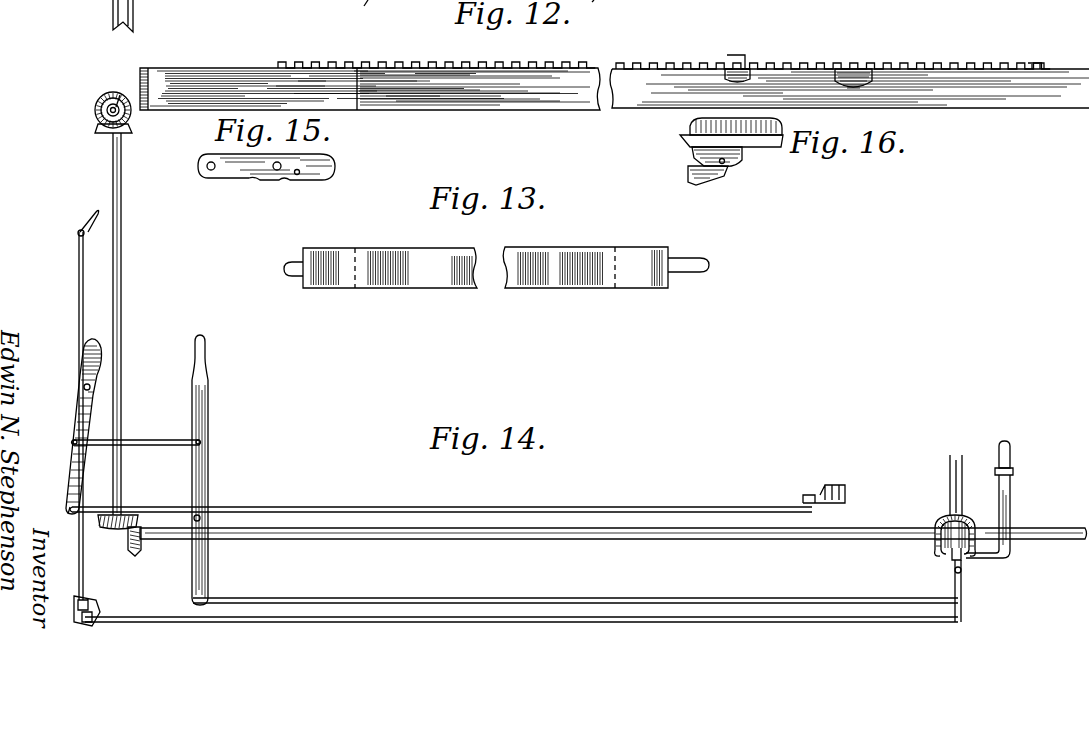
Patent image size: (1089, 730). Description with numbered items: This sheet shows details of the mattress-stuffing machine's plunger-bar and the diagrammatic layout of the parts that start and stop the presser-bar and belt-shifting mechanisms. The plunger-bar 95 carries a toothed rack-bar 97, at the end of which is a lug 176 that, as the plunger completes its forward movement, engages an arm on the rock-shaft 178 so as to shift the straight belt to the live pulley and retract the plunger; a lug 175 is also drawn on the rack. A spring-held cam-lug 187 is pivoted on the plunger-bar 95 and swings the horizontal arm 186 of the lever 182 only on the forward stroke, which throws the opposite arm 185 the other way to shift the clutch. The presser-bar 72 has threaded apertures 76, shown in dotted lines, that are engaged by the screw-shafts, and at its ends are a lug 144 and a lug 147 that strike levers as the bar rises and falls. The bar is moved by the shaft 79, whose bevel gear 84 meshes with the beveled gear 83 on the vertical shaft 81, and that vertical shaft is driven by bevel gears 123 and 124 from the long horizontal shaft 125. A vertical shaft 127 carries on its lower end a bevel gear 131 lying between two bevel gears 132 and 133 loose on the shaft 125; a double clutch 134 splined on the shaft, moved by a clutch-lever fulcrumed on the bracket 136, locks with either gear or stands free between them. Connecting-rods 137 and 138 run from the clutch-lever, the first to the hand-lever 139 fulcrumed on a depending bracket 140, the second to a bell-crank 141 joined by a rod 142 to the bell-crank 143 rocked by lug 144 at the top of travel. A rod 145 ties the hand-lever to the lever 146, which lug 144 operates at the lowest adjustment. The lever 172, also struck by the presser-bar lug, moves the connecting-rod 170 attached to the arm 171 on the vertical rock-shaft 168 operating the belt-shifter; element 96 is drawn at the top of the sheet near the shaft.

In FIG. 12, the pointer ribbon 96 is at (139, 16).
In FIG. 12, the vertical rock-shaft 168 is at (381, 11).
In FIG. 12, the rock-shaft 178 is at (605, 5).
In FIG. 12, the bevel gear 84 is at (97, 109).
In FIG. 12, the shaft 79 is at (125, 84).
In FIG. 12, the beveled gear 83 is at (96, 130).
In FIG. 12, the vertical shaft 81 is at (122, 166).
In FIG. 12, the rack-bar 97 is at (640, 64).
In FIG. 16, the rack-bar 97 is at (690, 128).
In FIG. 12, the rack lug 175 is at (856, 72).
In FIG. 12, the lug 176 is at (1048, 50).
In FIG. 15, the depending bracket 140 is at (262, 182).
In FIG. 16, the plunger-bar 95 is at (731, 152).
In FIG. 16, the cam-lug 187 is at (696, 186).
In FIG. 13, the presser-bar 72 is at (485, 283).
In FIG. 13, the threaded apertures 76 is at (616, 244).
In FIG. 13, the lug 147 is at (293, 278).
In FIG. 13, the lug 144 is at (705, 250).
In FIG. 14, the bell-crank 143 is at (77, 232).
In FIG. 14, the lever 146 is at (76, 413).
In FIG. 14, the lever 172 is at (72, 500).
In FIG. 14, the rod 142 is at (77, 525).
In FIG. 14, the rod 145 is at (136, 432).
In FIG. 14, the hand-lever 139 is at (207, 580).
In FIG. 14, the connecting-rod 170 is at (250, 500).
In FIG. 14, the arm 171 is at (828, 474).
In FIG. 14, the long horizontal shaft 125 is at (258, 541).
In FIG. 14, the bevel gear 124 is at (118, 530).
In FIG. 14, the bevel gear 123 is at (138, 556).
In FIG. 14, the connecting-rod 137 is at (650, 597).
In FIG. 14, the connecting-rod 138 is at (521, 633).
In FIG. 14, the bell-crank 141 is at (76, 625).
In FIG. 14, the vertical shaft 127 is at (966, 443).
In FIG. 14, the bevel gear 131 is at (968, 516).
In FIG. 14, the double clutch 134 is at (936, 553).
In FIG. 14, the bevel gear 132 is at (950, 556).
In FIG. 14, the bevel gear 133 is at (976, 553).
In FIG. 14, the bracket 136 is at (962, 594).
In FIG. 14, the horizontal arm 186 is at (1017, 445).
In FIG. 14, the lever 182 is at (1018, 488).
In FIG. 14, the horizontal arm 185 is at (1008, 560).